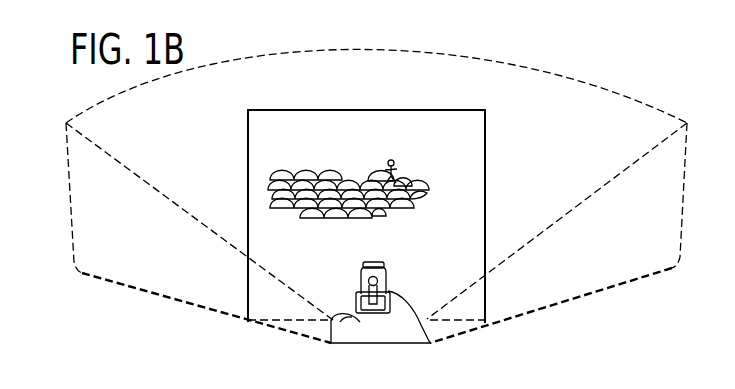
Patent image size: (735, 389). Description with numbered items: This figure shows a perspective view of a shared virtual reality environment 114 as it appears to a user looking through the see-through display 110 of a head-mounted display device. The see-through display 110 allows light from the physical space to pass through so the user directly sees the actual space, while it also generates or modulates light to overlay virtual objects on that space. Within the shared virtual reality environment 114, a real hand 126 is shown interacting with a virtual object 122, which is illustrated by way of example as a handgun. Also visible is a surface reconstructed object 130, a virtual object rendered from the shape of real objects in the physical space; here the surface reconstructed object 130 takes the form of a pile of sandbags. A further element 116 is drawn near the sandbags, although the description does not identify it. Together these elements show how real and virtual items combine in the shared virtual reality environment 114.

The see-through display 110 is at (635, 132).
The shared virtual reality environment 114 is at (537, 83).
The virtual character 116 is at (395, 160).
The virtual object 122 is at (380, 252).
The real hand 126 is at (410, 339).
The surface reconstructed object 130 is at (303, 160).